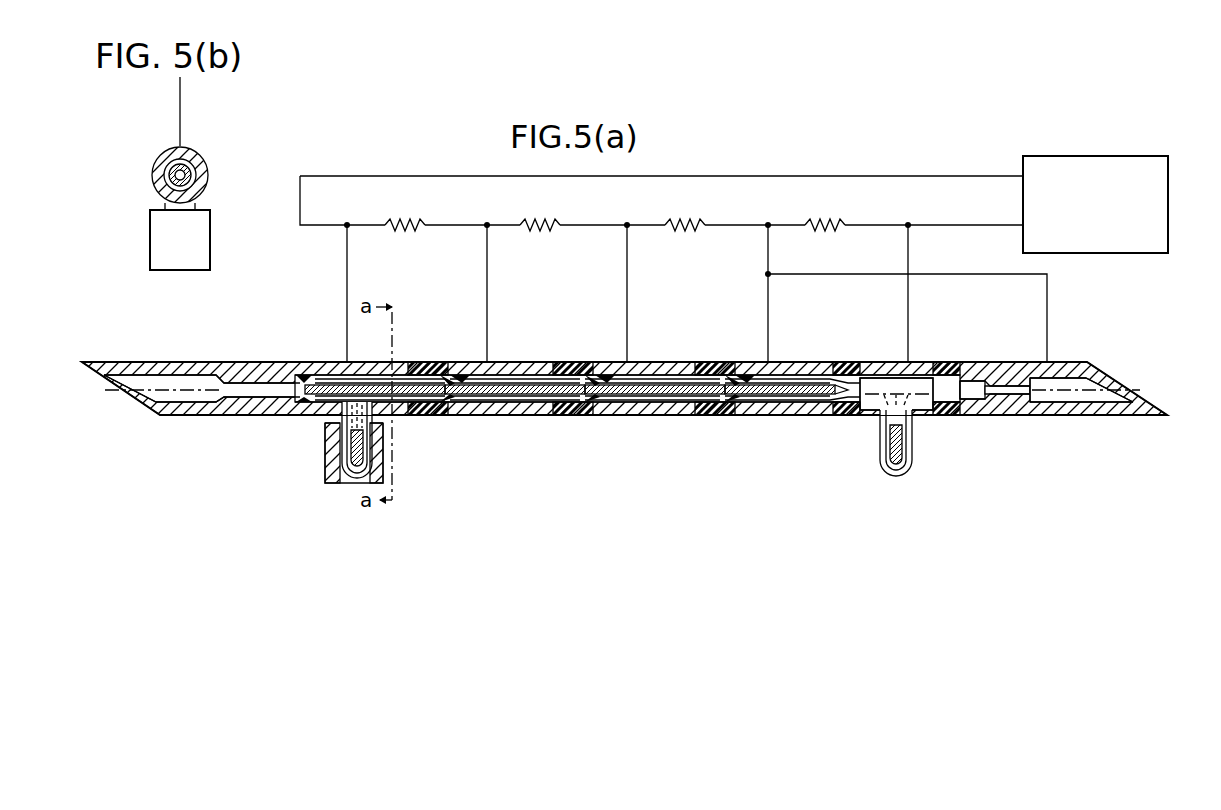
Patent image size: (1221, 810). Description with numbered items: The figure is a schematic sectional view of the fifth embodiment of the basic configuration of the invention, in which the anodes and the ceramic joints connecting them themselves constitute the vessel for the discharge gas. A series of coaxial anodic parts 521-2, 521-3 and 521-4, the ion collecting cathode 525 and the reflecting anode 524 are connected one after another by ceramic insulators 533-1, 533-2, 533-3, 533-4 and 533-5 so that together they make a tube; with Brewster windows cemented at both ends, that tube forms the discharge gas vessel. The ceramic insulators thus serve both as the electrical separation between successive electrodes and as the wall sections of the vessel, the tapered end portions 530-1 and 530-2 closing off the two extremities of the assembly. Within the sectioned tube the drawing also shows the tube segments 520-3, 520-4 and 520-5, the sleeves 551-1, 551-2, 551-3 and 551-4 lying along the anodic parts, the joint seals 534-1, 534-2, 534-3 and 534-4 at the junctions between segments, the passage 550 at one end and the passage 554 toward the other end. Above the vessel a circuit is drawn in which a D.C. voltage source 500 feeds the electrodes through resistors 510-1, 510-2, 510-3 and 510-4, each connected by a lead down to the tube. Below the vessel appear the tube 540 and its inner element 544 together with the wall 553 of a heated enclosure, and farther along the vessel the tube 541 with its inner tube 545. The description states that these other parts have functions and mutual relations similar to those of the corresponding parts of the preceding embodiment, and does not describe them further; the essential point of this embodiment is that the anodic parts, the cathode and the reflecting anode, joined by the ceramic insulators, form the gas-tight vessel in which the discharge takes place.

The D.C. voltage source 500 is at (1073, 155).
The resistor 510-1 is at (411, 220).
The resistor 510-2 is at (547, 220).
The resistor 510-3 is at (691, 220).
The resistor 510-4 is at (831, 220).
The tube segment 520-3 is at (500, 402).
The tube segment 520-4 is at (650, 417).
The tube segment 520-5 is at (765, 402).
The coaxial anodic part 521-2 is at (476, 417).
The coaxial anodic part 521-3 is at (570, 403).
The coaxial anodic part 521-4 is at (745, 417).
The reflecting anode 524 is at (1032, 416).
The ion collecting cathode 525 is at (833, 404).
The tapered housing end 530-1 is at (138, 408).
The tapered housing end 530-2 is at (1118, 380).
The ceramic insulator 533-1 is at (428, 362).
The ceramic insulator 533-2 is at (568, 362).
The ceramic insulator 533-3 is at (705, 362).
The ceramic insulator 533-4 is at (848, 362).
The ceramic insulator 533-5 is at (948, 362).
The joint seal 534-1 is at (318, 351).
The joint seal 534-2 is at (450, 378).
The joint seal 534-3 is at (592, 378).
The joint seal 534-4 is at (730, 378).
The thermocouple tube 540 is at (365, 480).
The probe tube 541 is at (912, 470).
The heater element 544 is at (352, 472).
The inner tube 545 is at (895, 470).
The inlet passage 550 is at (193, 377).
The insulating sleeve 551-1 is at (316, 402).
The insulating sleeve 551-2 is at (562, 417).
The insulating sleeve 551-3 is at (660, 403).
The insulating sleeve 551-4 is at (823, 417).
The heater wall 553 is at (328, 456).
The outlet passage 554 is at (910, 416).